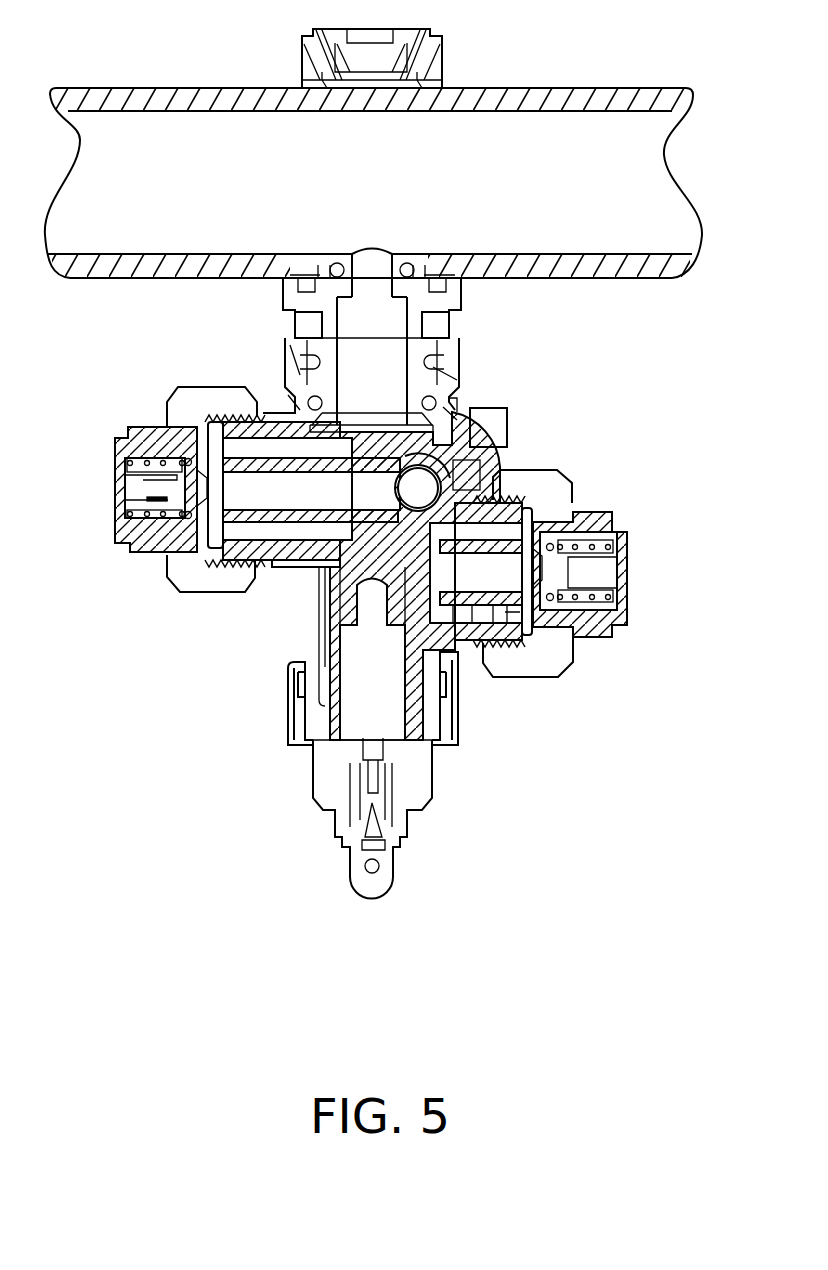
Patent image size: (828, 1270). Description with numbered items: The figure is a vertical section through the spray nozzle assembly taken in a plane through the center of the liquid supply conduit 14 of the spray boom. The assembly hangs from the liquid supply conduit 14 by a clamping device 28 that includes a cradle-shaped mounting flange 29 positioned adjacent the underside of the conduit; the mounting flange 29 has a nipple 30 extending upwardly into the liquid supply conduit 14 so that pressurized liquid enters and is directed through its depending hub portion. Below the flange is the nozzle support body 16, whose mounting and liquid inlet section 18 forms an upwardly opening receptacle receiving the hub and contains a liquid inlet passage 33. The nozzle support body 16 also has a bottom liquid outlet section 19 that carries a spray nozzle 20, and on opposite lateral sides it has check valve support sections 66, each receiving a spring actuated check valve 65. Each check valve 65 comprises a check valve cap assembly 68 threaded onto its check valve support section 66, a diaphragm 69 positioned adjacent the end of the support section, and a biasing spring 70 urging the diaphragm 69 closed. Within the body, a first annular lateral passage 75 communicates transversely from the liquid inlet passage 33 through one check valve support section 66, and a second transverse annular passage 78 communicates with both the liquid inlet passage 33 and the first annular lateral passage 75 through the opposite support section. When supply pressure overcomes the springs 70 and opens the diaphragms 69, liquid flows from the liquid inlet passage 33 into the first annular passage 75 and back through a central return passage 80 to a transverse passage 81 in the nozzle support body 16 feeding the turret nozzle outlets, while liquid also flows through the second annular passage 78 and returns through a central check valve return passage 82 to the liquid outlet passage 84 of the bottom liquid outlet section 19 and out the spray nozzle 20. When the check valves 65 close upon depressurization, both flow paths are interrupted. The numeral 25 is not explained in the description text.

The liquid supply conduit 14 is at (525, 93).
The clamping device 28 is at (443, 63).
The nipple 30 is at (300, 53).
The mounting flange 29 is at (460, 292).
The mounting and liquid inlet section 18 is at (460, 367).
The liquid inlet passage 33 is at (348, 425).
The nozzle support body 16 is at (296, 580).
The central check valve return passage 82 is at (462, 582).
The transverse passage 81 is at (418, 495).
The second transverse annular passage 78 is at (455, 530).
The check valve support section 66 is at (243, 422).
The check valve cap assembly 68 is at (167, 398).
The check valve 65 is at (106, 435).
The coupling block 25 is at (627, 530).
The biasing spring 70 is at (140, 536).
The central return passage 80 is at (265, 505).
The first annular lateral passage 75 is at (243, 527).
The diaphragm 69 is at (195, 527).
The bottom liquid outlet section 19 is at (330, 640).
The spray nozzle 20 is at (444, 771).
The liquid outlet passage 84 is at (350, 703).